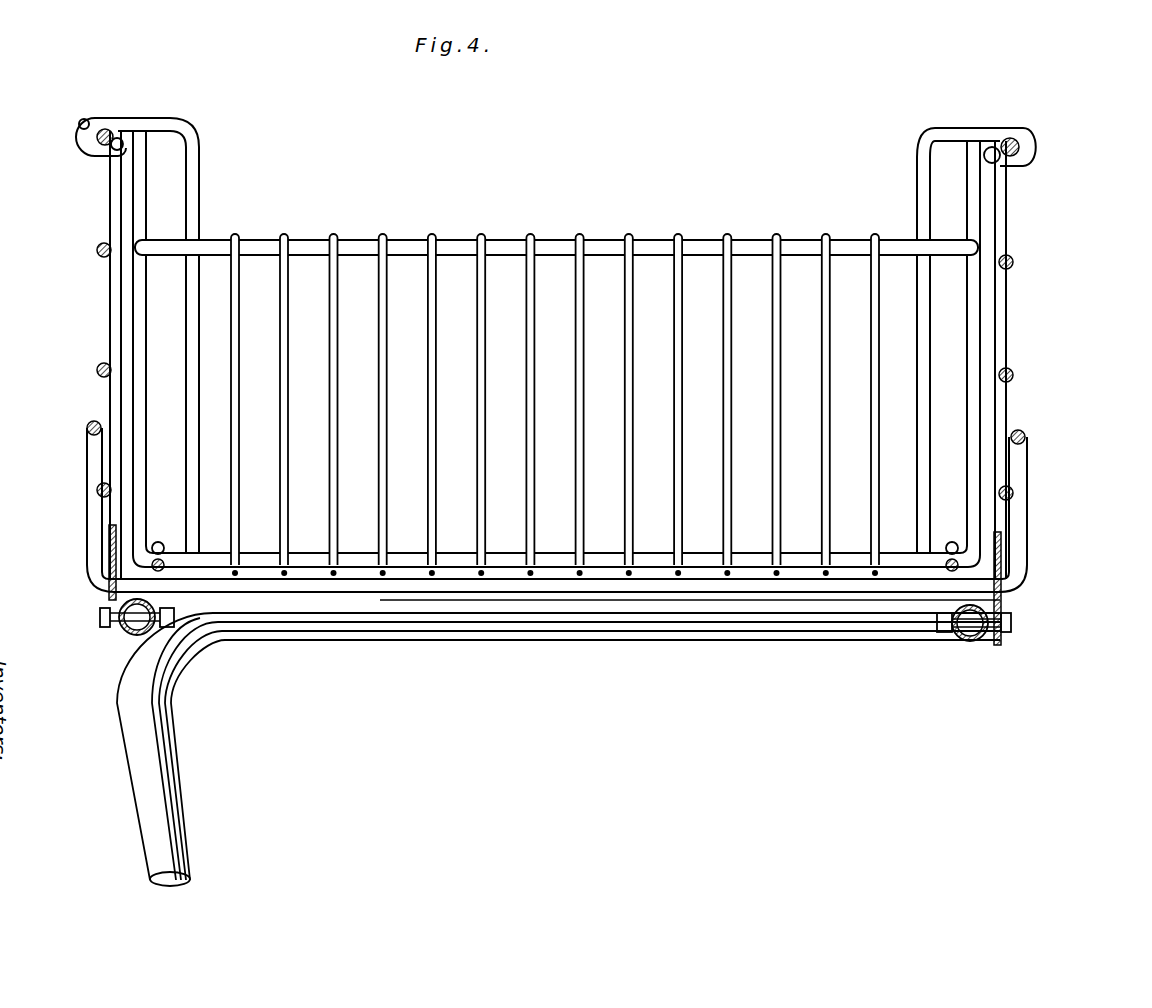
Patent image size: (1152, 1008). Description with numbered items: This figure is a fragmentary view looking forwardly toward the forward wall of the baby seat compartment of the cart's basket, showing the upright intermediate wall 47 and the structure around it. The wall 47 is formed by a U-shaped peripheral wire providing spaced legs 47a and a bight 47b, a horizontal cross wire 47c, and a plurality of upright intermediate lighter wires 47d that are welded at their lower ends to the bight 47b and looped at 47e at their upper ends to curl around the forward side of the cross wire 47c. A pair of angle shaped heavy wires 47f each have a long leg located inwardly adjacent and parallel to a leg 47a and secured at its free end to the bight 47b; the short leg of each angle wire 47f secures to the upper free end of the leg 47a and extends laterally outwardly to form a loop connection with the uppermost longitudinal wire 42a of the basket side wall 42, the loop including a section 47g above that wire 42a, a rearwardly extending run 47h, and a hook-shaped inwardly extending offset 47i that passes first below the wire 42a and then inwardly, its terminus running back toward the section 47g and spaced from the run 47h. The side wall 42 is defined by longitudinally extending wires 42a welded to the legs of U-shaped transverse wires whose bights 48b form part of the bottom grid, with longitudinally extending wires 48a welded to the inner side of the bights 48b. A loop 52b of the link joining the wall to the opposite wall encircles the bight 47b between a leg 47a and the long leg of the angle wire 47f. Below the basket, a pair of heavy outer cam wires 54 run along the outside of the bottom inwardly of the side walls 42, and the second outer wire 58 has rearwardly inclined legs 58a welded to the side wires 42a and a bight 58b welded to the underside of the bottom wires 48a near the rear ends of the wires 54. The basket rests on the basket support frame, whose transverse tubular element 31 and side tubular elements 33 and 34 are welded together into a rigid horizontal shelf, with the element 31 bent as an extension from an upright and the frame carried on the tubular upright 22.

The upright 22 is at (168, 816).
The transverse tubular element 31 is at (621, 634).
The side tubular element 33 is at (978, 643).
The side tubular element 34 is at (115, 638).
The side wall 42 is at (106, 302).
The longitudinally extending wire 42a is at (97, 252).
The upright intermediate wall 47 is at (411, 236).
The leg 47a is at (143, 208).
The bight 47b is at (541, 565).
The horizontal cross wire 47c is at (351, 244).
The upright intermediate lighter wire 47d is at (577, 290).
The loop 47e is at (776, 241).
The angle shaped heavy wire 47f is at (195, 172).
The section 47g is at (995, 131).
The rearwardly extending run 47h is at (1032, 142).
The hook-shaped inwardly extending offset 47i is at (1012, 166).
The longitudinally extending wire 48a is at (430, 578).
The bight 48b is at (478, 578).
The loop 52b is at (152, 548).
The heavy outer wire 54 is at (170, 596).
The outer wire 58 is at (84, 514).
The upright leg 58a is at (92, 487).
The bight 58b is at (735, 593).